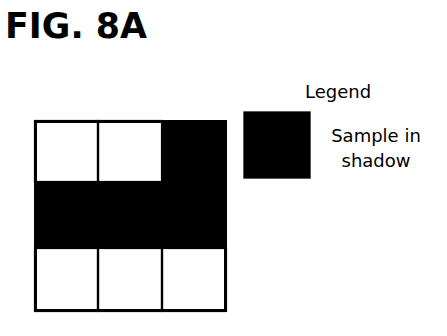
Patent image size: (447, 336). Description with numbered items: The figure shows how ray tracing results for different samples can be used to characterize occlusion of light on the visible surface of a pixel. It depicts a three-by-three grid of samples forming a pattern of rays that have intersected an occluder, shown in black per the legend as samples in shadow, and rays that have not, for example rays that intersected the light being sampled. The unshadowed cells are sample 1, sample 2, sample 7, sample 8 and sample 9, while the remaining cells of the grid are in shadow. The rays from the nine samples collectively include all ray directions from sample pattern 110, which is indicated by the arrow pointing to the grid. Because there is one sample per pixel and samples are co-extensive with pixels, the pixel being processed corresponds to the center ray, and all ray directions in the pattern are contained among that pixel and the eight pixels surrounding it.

The sample pattern 110 is at (130, 189).
The sample 1 is at (66, 151).
The sample 2 is at (130, 151).
The sample 7 is at (66, 279).
The sample 8 is at (130, 279).
The sample 9 is at (194, 279).